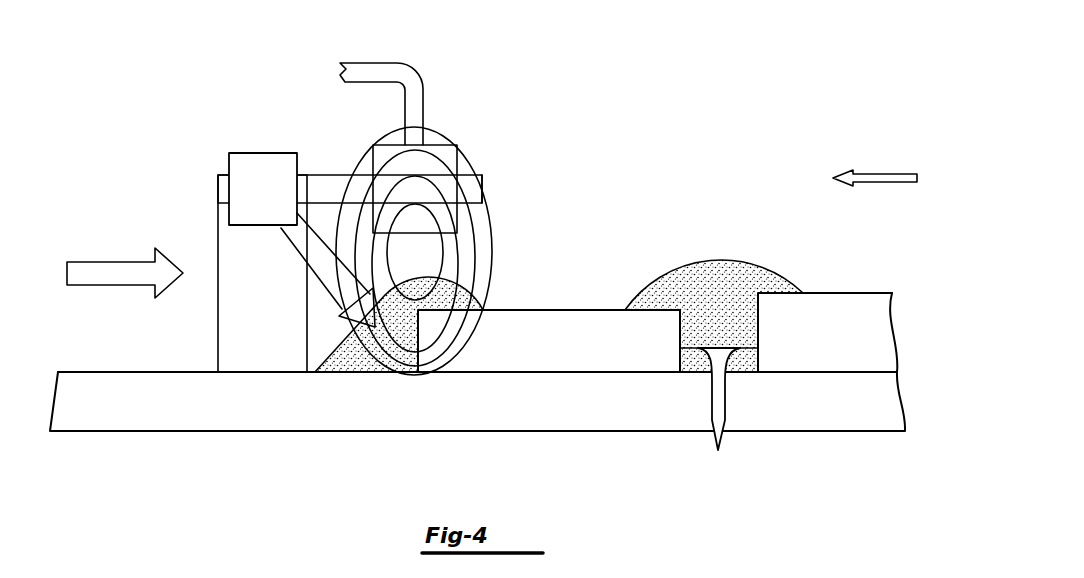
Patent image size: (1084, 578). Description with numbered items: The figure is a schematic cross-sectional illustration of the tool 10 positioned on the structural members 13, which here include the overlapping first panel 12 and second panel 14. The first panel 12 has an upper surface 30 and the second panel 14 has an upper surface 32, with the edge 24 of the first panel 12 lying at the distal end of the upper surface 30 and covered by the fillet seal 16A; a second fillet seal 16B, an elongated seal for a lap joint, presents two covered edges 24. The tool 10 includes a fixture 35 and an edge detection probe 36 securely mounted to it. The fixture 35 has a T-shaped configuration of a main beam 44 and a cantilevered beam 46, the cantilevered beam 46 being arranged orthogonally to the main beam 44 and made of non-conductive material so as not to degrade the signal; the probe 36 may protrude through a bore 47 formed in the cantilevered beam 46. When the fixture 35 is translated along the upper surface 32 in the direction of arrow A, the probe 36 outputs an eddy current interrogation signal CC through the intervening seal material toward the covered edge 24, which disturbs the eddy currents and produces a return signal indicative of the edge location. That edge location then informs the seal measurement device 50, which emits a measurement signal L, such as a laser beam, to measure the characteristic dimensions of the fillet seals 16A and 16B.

The tool 10 is at (792, 112).
The first panel 12 is at (600, 353).
The structural members 13 is at (917, 299).
The second panel 14 is at (602, 412).
The fillet seal 16A is at (478, 310).
The fillet seal 16B is at (758, 268).
The edge 24 is at (330, 455).
The upper surface 30 is at (608, 308).
The upper surface 32 is at (118, 372).
The fixture 35 is at (196, 118).
The edge detection probe 36 is at (432, 145).
The main beam 44 is at (269, 347).
The cantilevered beam 46 is at (318, 182).
The bore 47 is at (460, 212).
The seal measurement device 50 is at (263, 189).
The measurement signal L is at (310, 249).
The direction of translation A is at (107, 260).
The interrogation signal CC is at (470, 168).